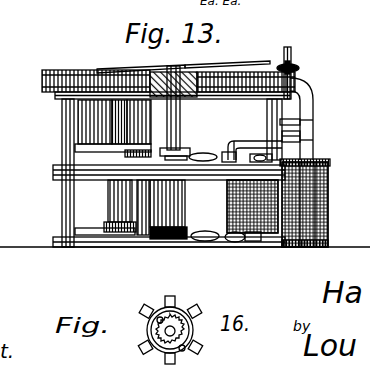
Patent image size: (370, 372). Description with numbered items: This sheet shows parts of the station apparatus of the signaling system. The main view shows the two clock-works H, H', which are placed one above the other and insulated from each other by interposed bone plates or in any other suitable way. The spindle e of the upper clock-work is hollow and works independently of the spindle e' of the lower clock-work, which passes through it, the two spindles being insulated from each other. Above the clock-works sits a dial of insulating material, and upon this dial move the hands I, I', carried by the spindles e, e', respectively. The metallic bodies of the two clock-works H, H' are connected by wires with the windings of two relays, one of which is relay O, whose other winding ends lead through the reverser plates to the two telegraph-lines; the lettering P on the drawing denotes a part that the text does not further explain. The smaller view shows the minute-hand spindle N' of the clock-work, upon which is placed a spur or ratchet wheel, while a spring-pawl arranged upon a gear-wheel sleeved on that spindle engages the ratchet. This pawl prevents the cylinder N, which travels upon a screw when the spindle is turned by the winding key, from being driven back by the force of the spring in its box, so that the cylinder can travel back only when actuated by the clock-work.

In FIG. 13, the hand I is at (113, 74).
In FIG. 13, the hand I' is at (240, 71).
In FIG. 13, the clock-work H is at (93, 173).
In FIG. 13, the clock-work H' is at (109, 209).
In FIG. 13, the pump P is at (311, 203).
In FIG. 13, the spindle e is at (246, 119).
In FIG. 13, the spindle e' is at (176, 113).
In FIG. 16, the cylinder N is at (176, 330).
In FIG. 16, the minute-hand spindle N' is at (176, 318).
In FIG. 16, the relay O is at (172, 339).